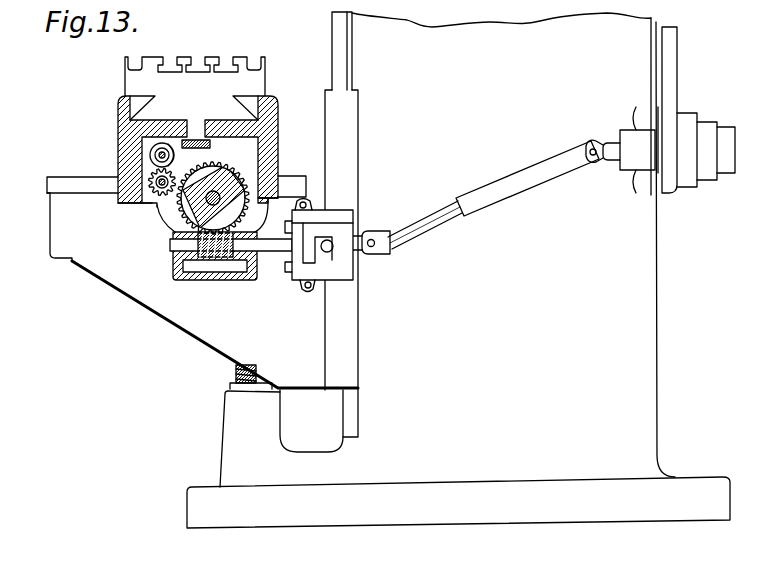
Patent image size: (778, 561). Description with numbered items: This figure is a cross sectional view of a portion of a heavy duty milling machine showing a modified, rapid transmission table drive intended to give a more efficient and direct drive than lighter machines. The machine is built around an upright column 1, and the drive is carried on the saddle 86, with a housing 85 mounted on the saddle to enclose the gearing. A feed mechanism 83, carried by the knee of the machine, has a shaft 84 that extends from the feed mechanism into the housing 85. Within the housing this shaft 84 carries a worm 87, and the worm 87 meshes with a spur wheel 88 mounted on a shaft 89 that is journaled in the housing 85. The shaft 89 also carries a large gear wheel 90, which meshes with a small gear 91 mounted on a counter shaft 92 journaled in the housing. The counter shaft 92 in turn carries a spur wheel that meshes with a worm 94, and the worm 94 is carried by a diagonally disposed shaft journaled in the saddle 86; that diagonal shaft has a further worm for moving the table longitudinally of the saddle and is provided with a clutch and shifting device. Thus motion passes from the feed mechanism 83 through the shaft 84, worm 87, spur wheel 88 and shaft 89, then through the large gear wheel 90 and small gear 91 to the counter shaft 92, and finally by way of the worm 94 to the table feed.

The column 1 is at (650, 381).
The feed mechanism 83 is at (295, 258).
The shaft 84 is at (268, 256).
The housing 85 is at (172, 248).
The saddle 86 is at (119, 143).
The worm 87 is at (200, 275).
The spur wheel 88 is at (240, 178).
The shaft 89 is at (270, 112).
The large gear wheel 90 is at (166, 207).
The small gear 91 is at (116, 202).
The counter shaft 92 is at (100, 224).
The worm 94 is at (172, 142).